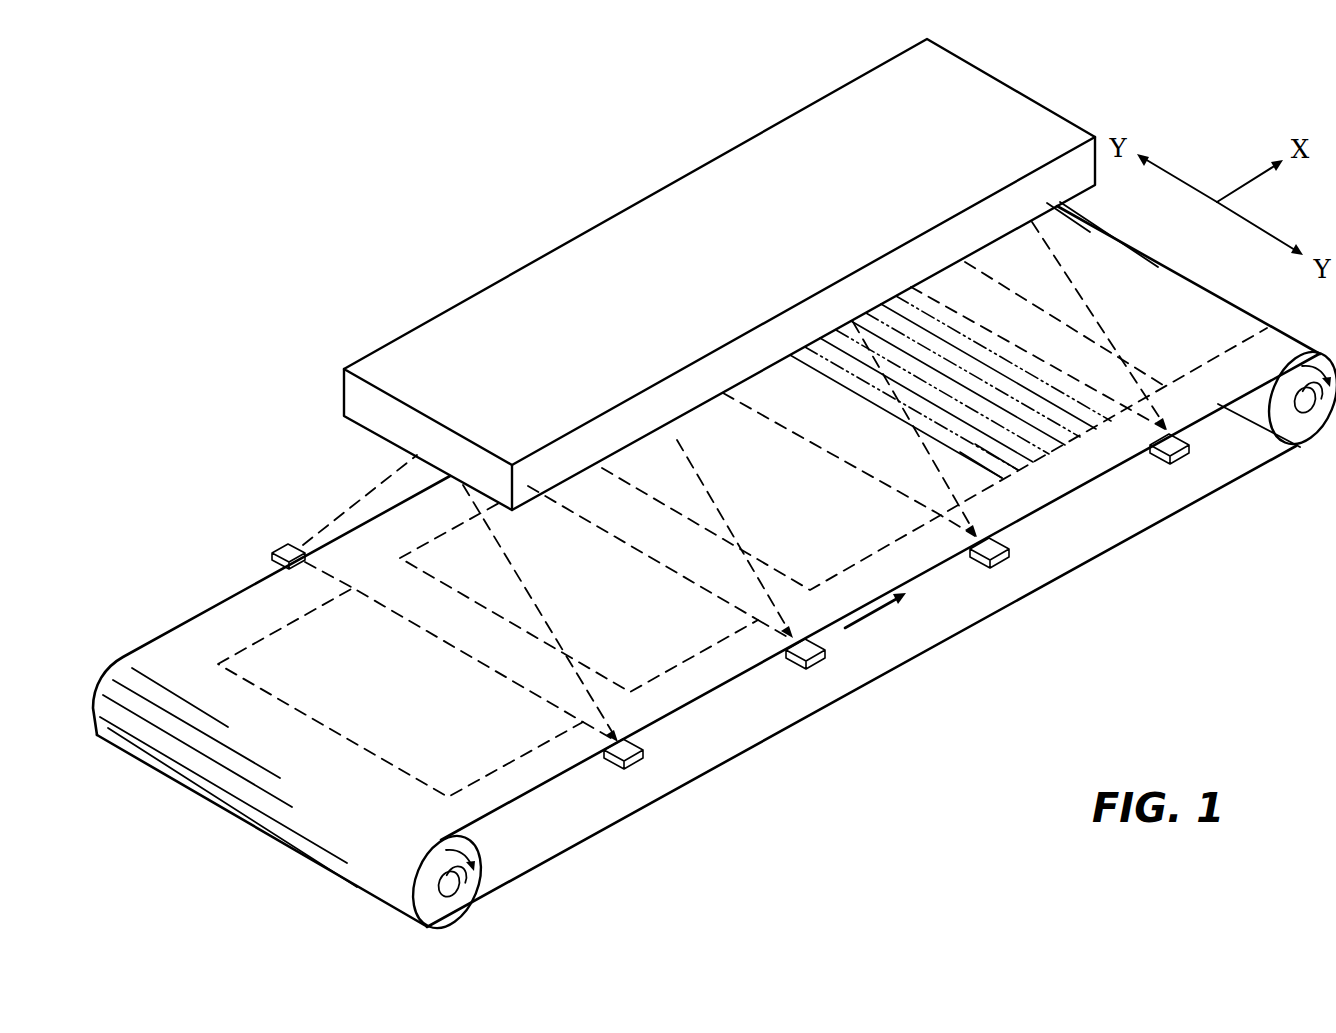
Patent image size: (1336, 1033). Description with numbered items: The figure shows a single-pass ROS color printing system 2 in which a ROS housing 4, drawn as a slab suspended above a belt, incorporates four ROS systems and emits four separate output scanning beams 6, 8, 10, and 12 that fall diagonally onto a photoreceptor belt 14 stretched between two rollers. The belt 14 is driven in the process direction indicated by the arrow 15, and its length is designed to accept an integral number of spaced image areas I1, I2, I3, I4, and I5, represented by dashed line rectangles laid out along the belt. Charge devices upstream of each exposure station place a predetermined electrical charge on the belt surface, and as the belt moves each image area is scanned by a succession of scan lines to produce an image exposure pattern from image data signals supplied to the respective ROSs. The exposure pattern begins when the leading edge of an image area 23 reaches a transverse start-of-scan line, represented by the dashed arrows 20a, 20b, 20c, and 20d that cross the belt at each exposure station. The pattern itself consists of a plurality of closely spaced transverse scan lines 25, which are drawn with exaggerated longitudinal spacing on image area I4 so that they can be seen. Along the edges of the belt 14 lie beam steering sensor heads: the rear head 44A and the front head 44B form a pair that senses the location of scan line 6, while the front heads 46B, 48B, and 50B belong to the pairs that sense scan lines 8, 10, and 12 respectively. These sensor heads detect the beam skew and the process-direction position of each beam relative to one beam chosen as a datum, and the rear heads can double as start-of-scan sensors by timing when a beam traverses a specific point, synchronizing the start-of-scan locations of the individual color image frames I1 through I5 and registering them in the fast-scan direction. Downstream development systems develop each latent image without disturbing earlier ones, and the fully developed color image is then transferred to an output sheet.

The single-pass ROS color printing system 2 is at (396, 208).
The ROS housing 4 is at (645, 223).
The output scanning beam 6 is at (538, 598).
The output scanning beam 8 is at (718, 493).
The output scanning beam 10 is at (883, 484).
The output scanning beam 12 is at (1098, 315).
The photoreceptor belt 14 is at (1036, 509).
The arrow 15 is at (902, 622).
The dashed arrow 20a is at (470, 658).
The dashed arrow 20b is at (641, 547).
The dashed arrow 20c is at (828, 452).
The dashed arrow 20d is at (1088, 398).
The image area 23 is at (1014, 352).
The transverse scan lines 25 is at (986, 447).
The beam steering sensor head 44A is at (280, 540).
The beam steering sensor head 44B is at (641, 768).
The beam steering sensor head 46B is at (818, 668).
The beam steering sensor head 48B is at (1004, 565).
The beam steering sensor head 50B is at (1191, 460).
The image area I1 is at (522, 753).
The image area I2 is at (703, 648).
The image area I3 is at (831, 570).
The image area I4 is at (1058, 398).
The image area I5 is at (1207, 360).